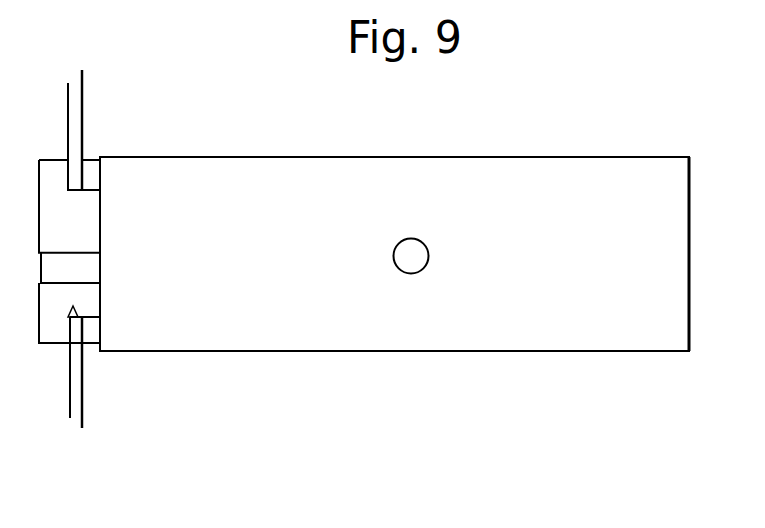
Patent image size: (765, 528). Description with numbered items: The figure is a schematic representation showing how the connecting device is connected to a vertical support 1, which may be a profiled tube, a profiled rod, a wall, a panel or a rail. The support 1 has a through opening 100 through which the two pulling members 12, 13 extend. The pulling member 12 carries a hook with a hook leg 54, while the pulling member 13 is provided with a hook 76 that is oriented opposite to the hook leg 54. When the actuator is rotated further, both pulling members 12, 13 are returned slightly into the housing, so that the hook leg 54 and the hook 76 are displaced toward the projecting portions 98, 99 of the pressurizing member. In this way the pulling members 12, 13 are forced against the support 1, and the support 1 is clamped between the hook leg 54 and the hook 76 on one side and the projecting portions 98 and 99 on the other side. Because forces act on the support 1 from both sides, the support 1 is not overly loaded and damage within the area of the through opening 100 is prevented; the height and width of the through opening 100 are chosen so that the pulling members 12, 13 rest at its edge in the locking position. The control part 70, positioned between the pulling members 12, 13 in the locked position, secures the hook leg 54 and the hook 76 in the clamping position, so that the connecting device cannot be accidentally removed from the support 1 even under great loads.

The vertical support 1 is at (75, 112).
The pulling member 12 is at (82, 226).
The pulling member 13 is at (90, 301).
The hook leg 54 is at (57, 178).
The control part 70 is at (85, 270).
The hook 76 is at (57, 330).
The projecting portion 98 is at (90, 178).
The projecting portion 99 is at (93, 330).
The through opening 100 is at (82, 320).